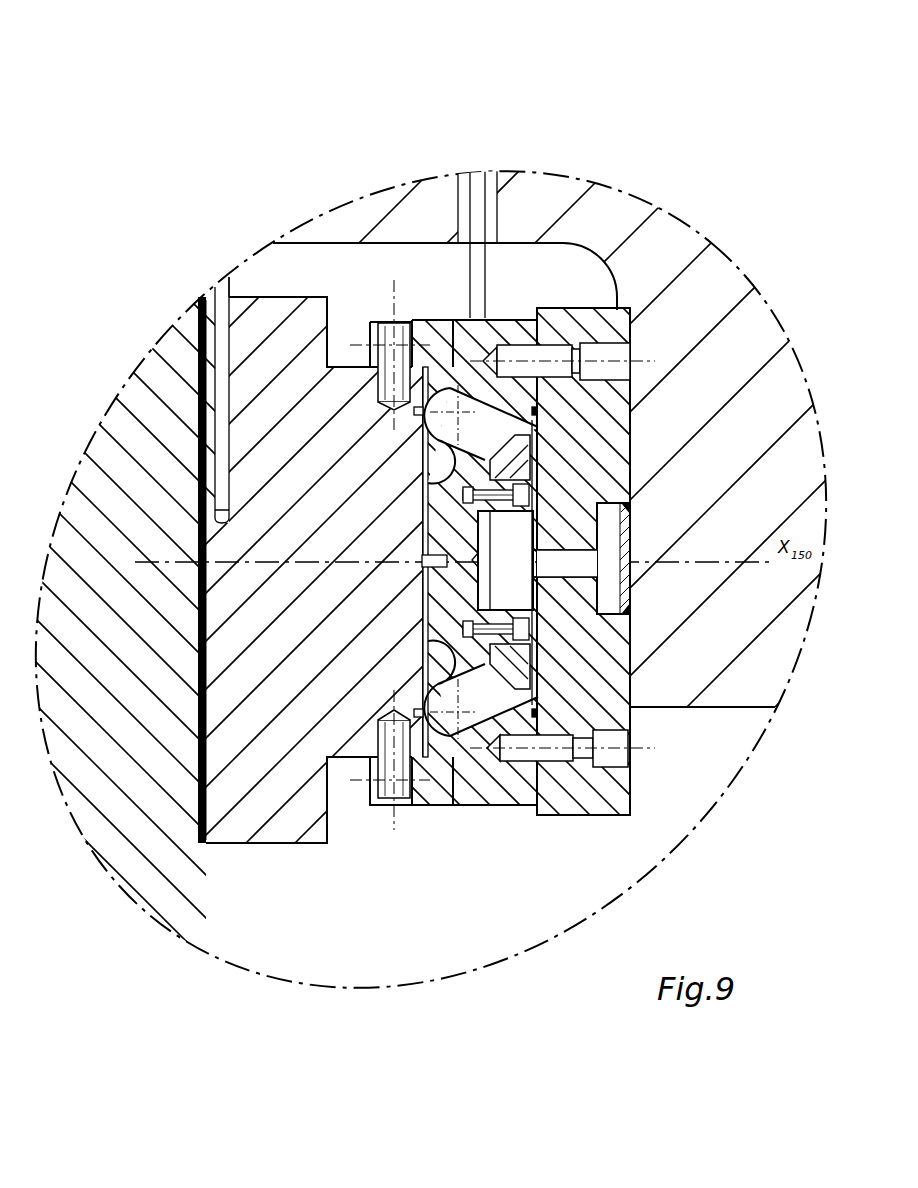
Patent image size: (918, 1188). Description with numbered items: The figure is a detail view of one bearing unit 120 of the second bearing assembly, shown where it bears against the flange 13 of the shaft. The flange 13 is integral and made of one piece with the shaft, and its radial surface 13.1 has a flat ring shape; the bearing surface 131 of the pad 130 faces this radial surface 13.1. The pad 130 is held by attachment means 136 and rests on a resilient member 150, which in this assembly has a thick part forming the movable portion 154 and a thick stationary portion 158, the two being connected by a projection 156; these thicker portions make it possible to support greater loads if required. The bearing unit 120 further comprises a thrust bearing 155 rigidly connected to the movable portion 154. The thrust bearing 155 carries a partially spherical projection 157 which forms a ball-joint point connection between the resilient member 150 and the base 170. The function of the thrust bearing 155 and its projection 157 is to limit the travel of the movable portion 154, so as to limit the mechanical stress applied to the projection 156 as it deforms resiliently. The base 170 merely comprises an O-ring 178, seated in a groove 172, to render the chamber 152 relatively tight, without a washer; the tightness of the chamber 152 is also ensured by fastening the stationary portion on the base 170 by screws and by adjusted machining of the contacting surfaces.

The bearing unit 120 is at (163, 250).
The flange 13 is at (120, 423).
The radial surface 13.1 is at (208, 745).
The pad 130 is at (459, 560).
The bearing surface 131 is at (197, 806).
The attachment means 136 is at (390, 800).
The resilient member 150 is at (380, 93).
The chamber 152 is at (493, 693).
The movable portion 154 is at (440, 513).
The thrust bearing 155 is at (507, 593).
The projection 156 is at (445, 425).
The partially spherical projection 157 is at (537, 570).
The stationary portion 158 is at (463, 330).
The base 170 is at (597, 445).
The groove 172 is at (603, 532).
The O-ring 178 is at (545, 706).